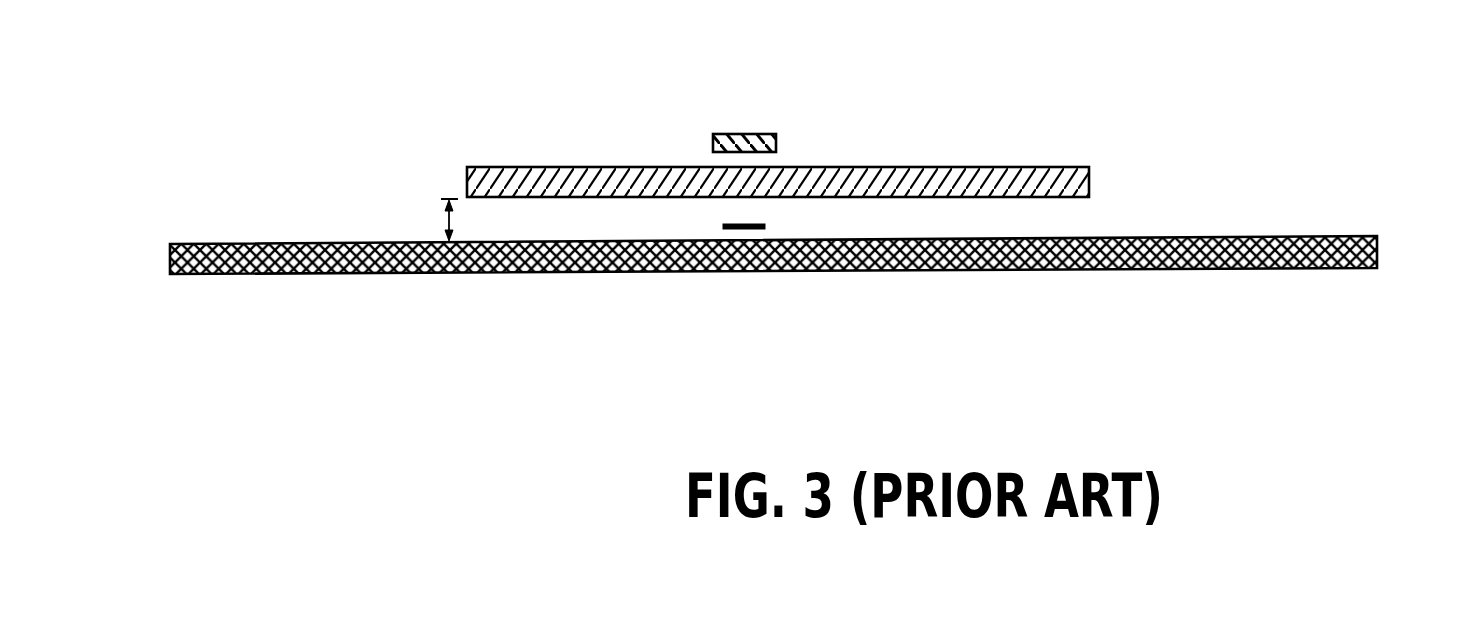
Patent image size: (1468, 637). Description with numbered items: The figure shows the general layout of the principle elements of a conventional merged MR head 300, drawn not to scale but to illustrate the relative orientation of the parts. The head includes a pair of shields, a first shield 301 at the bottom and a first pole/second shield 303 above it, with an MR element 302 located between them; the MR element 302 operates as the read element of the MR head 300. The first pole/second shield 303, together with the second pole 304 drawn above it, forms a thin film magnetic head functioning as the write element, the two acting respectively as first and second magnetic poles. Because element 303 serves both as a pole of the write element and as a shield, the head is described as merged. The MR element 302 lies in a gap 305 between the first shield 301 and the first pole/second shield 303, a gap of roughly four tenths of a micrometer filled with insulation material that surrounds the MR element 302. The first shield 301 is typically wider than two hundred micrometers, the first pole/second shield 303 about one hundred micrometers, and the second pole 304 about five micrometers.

The merged MR head 300 is at (170, 119).
The first shield 301 is at (1377, 252).
The MR element 302 is at (765, 225).
The first pole/second shield 303 is at (1090, 183).
The second pole 304 is at (777, 142).
The gap 305 is at (449, 222).